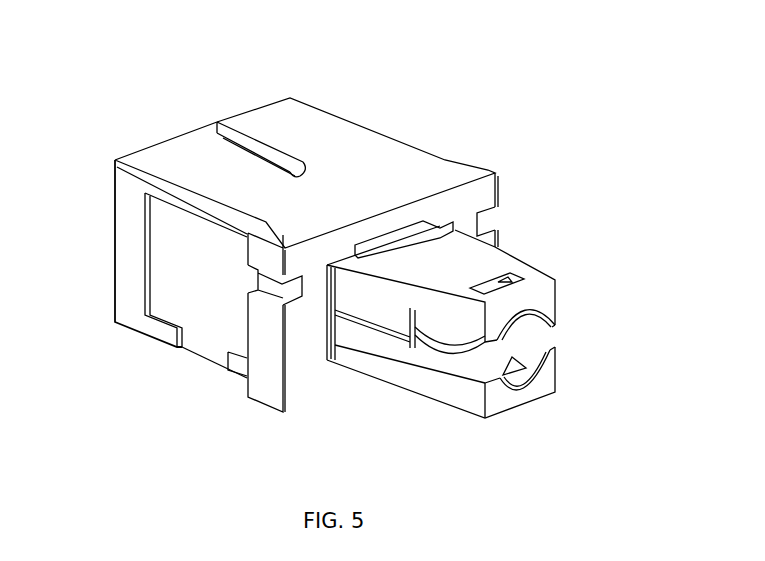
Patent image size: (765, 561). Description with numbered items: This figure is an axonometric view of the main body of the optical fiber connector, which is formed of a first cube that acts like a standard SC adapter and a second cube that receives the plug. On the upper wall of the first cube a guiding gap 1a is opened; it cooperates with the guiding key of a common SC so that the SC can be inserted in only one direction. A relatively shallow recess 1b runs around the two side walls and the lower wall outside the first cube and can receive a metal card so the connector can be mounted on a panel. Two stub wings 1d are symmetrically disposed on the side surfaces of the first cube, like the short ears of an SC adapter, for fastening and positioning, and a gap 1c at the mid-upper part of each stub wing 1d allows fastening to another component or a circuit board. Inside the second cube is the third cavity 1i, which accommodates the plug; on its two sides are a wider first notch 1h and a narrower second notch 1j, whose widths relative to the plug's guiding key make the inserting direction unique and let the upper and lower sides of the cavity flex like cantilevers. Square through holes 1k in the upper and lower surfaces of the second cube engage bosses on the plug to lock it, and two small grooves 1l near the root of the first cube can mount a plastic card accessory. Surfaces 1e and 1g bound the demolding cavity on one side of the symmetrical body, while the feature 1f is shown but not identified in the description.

The guiding gap 1a is at (243, 137).
The shallow recess 1b is at (183, 270).
The gap 1c is at (268, 292).
The stub wings 1d is at (265, 368).
The cavity-bounding surface 1e is at (327, 333).
The upper block front face 1f is at (372, 312).
The cavity-bounding surface 1g is at (386, 366).
The first notch 1h is at (460, 380).
The third cavity 1i is at (499, 360).
The second notch 1j is at (535, 337).
The square through holes 1k is at (512, 282).
The small grooves 1l is at (398, 228).